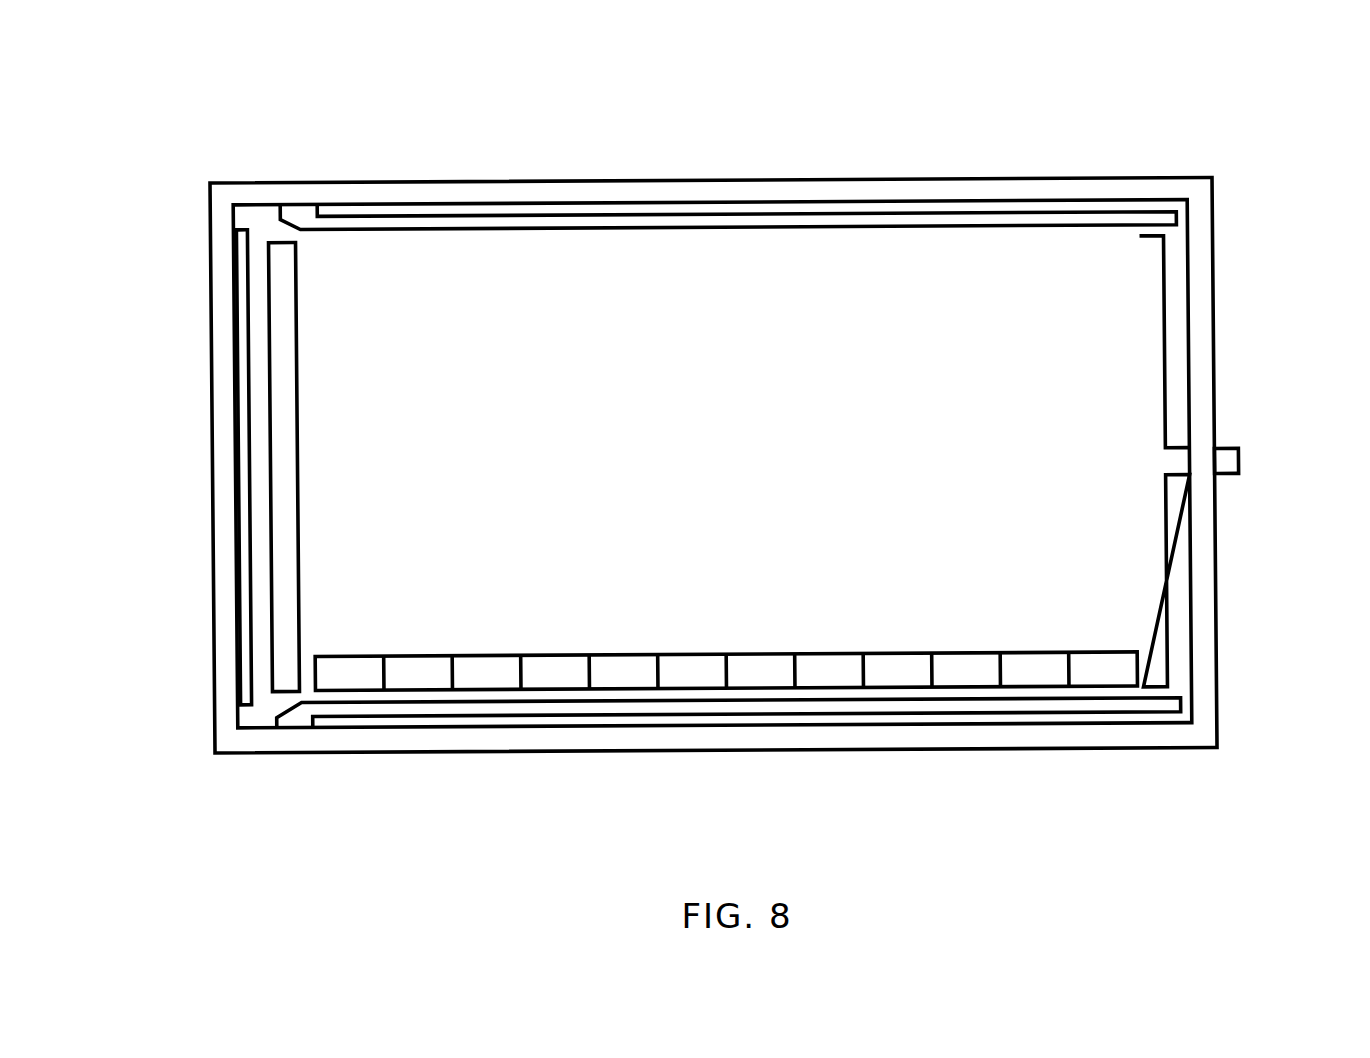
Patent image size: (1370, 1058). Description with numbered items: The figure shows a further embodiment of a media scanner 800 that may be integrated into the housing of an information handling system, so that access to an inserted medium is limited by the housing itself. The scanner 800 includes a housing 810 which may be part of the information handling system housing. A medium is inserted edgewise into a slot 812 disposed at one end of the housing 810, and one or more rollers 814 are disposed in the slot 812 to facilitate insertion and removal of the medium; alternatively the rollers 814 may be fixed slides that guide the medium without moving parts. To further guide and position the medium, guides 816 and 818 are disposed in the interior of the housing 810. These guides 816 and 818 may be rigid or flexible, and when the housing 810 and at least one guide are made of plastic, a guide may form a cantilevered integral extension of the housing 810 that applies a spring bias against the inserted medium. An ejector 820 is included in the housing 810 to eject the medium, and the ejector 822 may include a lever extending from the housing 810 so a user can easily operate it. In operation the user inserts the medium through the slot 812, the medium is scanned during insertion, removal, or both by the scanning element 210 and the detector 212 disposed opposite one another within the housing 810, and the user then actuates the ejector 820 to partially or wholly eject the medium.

The scanner 800 is at (893, 95).
The housing 810 is at (1114, 176).
The slot 812 is at (209, 266).
The rollers 814 is at (248, 263).
The scanning element 210 is at (298, 263).
The detector 212 is at (488, 691).
The guide 816 is at (672, 214).
The guide 818 is at (618, 716).
The ejector 820 is at (1164, 282).
The ejector 822 is at (1238, 461).